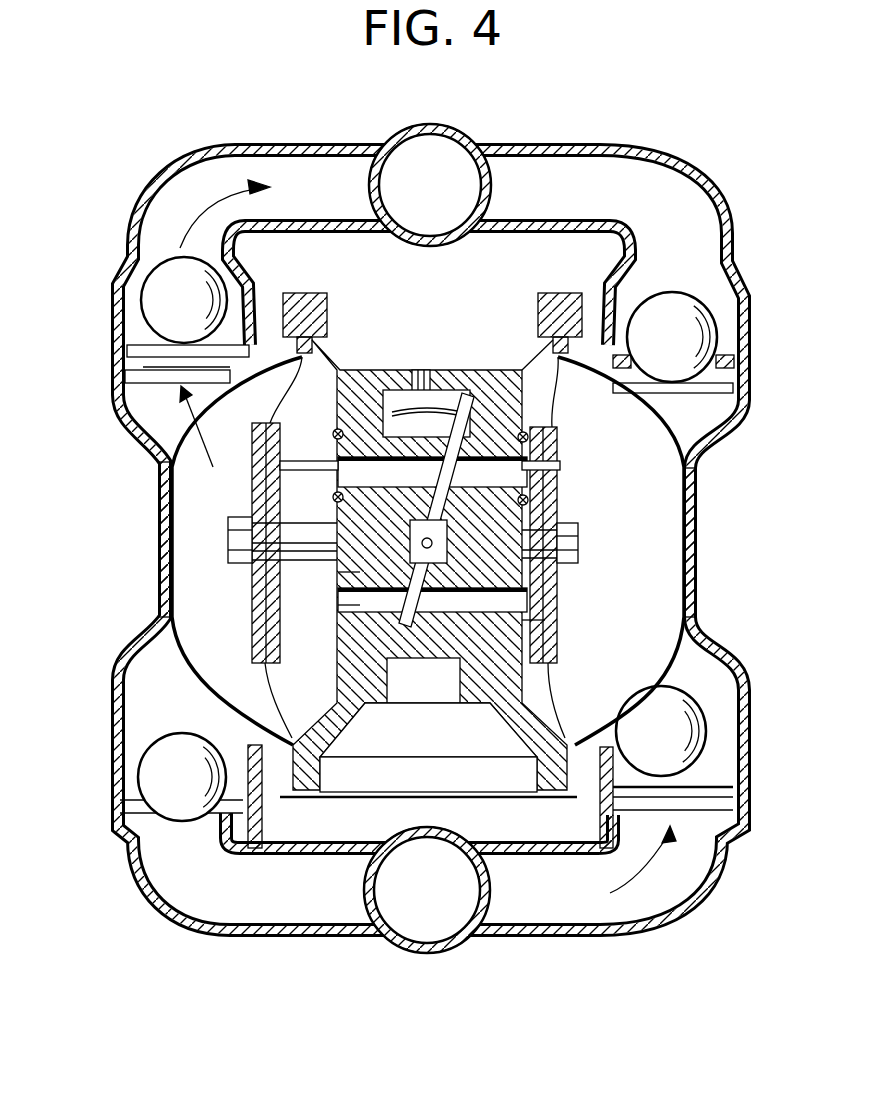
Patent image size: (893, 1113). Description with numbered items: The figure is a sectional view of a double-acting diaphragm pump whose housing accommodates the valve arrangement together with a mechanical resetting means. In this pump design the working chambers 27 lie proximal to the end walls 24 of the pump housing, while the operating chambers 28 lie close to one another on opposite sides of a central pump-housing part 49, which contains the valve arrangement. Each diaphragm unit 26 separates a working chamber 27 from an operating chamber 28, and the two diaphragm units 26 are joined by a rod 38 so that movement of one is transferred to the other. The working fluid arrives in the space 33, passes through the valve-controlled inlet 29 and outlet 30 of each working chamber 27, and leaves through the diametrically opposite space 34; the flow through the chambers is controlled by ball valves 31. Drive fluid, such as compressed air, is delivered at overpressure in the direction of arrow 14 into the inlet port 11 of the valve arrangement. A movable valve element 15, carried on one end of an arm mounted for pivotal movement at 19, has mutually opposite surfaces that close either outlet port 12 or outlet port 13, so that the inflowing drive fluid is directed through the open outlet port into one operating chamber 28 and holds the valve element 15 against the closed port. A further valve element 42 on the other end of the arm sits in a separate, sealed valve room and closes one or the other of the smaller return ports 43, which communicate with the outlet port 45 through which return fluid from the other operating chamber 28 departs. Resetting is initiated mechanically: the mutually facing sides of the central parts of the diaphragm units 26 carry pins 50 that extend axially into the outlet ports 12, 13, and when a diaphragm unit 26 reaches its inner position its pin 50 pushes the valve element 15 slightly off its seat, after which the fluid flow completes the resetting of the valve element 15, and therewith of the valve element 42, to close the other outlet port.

The inlet port 11 is at (426, 384).
The outlet port 12 is at (374, 438).
The outlet port 13 is at (547, 490).
The arrow 14 is at (428, 362).
The valve element 15 is at (428, 402).
The pivot mounting 19 is at (420, 540).
The end wall 24 is at (160, 533).
The diaphragm unit 26 is at (250, 588).
The working chamber 27 is at (197, 640).
The operating chamber 28 is at (197, 640).
The inlet 29 is at (730, 777).
The outlet 30 is at (178, 360).
The ball valve 31 is at (153, 282).
The space 33 is at (460, 917).
The space 34 is at (447, 153).
The rod 38 is at (557, 563).
The valve element 42 is at (425, 640).
The port 43 is at (355, 603).
The outlet port 45 is at (393, 680).
The central pump-housing part 49 is at (353, 572).
The pin 50 is at (308, 463).